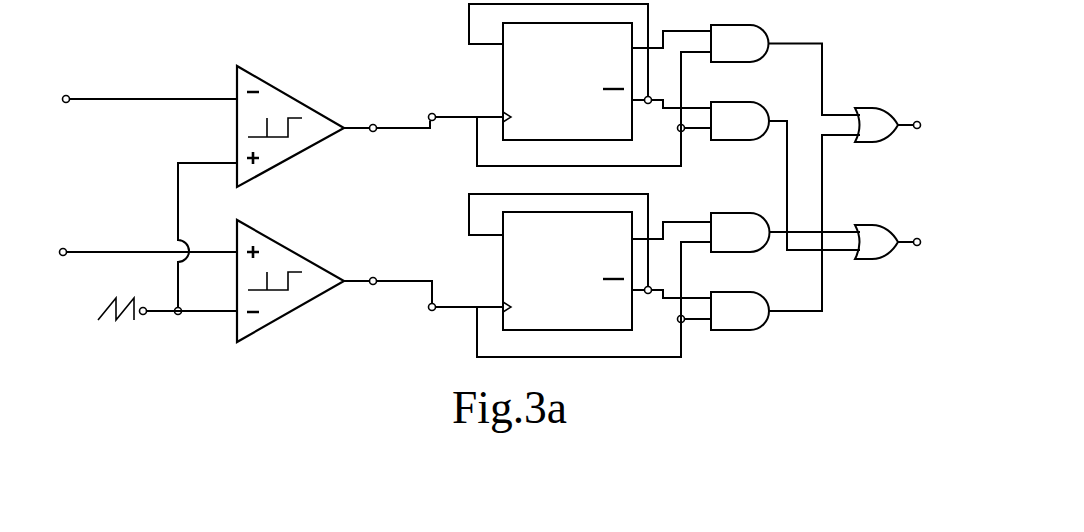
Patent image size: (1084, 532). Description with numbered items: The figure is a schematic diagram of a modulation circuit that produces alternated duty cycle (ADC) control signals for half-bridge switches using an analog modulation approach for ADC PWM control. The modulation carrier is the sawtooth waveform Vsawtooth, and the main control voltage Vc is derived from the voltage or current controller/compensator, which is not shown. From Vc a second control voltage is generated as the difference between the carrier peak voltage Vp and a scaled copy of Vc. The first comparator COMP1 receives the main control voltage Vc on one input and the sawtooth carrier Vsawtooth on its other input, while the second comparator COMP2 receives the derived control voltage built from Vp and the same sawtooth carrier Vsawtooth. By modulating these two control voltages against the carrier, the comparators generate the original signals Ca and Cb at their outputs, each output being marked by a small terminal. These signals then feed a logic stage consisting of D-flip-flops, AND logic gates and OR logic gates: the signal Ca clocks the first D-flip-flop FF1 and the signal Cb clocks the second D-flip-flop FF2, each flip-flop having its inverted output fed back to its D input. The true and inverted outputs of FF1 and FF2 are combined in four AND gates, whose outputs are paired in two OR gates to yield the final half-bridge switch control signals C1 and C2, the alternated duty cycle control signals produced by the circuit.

The comparator COMP1 is at (313, 126).
The comparator COMP2 is at (313, 285).
The main control voltage Vc is at (145, 119).
The peak voltage of the carrier Vp is at (138, 234).
The modulation carrier waveform Vsawtooth is at (145, 323).
The original signal Ca is at (423, 113).
The original signal Cb is at (423, 277).
The D-flip-flop FF1 is at (590, 85).
The D-flip-flop FF2 is at (590, 275).
The half-bridge switch control signal C1 is at (905, 128).
The half-bridge switch control signal C2 is at (905, 244).